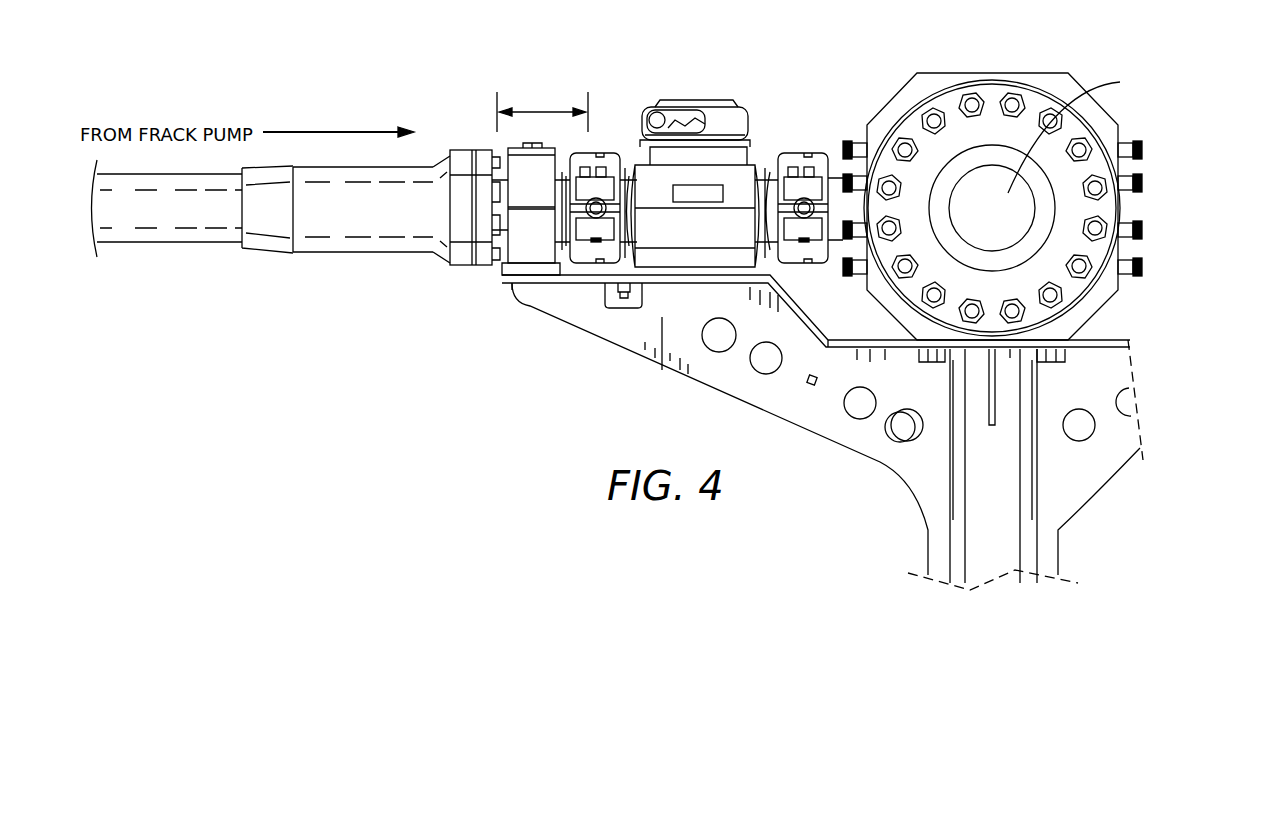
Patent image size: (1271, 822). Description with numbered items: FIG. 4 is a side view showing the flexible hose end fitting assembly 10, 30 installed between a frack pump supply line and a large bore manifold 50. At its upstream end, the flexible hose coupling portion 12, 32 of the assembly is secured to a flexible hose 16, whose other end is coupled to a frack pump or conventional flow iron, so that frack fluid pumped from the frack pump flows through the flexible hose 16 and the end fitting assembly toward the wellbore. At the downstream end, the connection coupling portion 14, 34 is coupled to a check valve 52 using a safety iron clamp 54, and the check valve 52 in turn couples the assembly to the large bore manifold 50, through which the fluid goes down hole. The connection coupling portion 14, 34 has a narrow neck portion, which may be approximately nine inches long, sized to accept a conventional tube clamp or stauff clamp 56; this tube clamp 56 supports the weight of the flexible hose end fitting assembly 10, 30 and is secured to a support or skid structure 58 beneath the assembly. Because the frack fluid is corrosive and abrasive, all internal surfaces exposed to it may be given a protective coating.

The flexible hose end fitting assembly 10 is at (663, 299).
The flexible hose end fitting assembly 30 is at (260, 25).
The flexible hose 16 is at (172, 246).
The flexible hose coupling portion 12 is at (346, 227).
The flexible hose coupling portion 32 is at (355, 252).
The tube clamp 56 is at (527, 247).
The connection coupling portion 14 is at (503, 251).
The connection coupling portion 34 is at (563, 228).
The safety iron clamp 54 is at (598, 153).
The check valve 52 is at (710, 102).
The large bore manifold 50 is at (900, 95).
The skid structure 58 is at (663, 360).